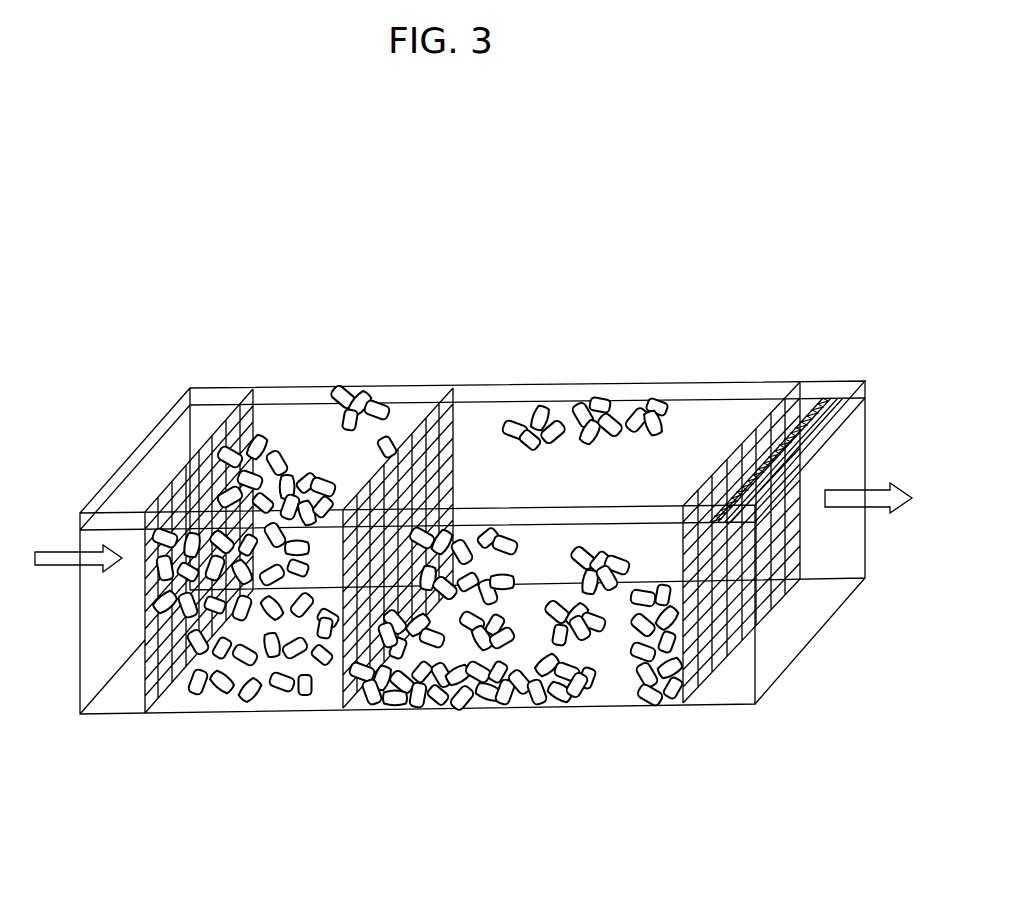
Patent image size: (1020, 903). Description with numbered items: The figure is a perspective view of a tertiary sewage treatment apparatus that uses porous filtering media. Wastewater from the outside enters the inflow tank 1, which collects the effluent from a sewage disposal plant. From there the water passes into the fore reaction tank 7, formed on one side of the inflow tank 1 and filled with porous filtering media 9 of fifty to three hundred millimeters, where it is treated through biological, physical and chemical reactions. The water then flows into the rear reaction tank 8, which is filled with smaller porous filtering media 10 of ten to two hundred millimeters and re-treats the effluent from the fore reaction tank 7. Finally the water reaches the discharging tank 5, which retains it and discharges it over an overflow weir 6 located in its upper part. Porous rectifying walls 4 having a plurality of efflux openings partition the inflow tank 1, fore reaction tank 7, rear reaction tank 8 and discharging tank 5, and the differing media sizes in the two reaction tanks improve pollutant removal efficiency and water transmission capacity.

The inflow tank 1 is at (113, 697).
The porous rectifying walls 4 is at (793, 400).
The discharging tank 5 is at (722, 688).
The overflow weir 6 is at (825, 400).
The fore reaction tank 7 is at (297, 422).
The rear reaction tank 8 is at (698, 415).
The porous filtering media 9 is at (293, 682).
The porous filtering media 10 is at (463, 683).